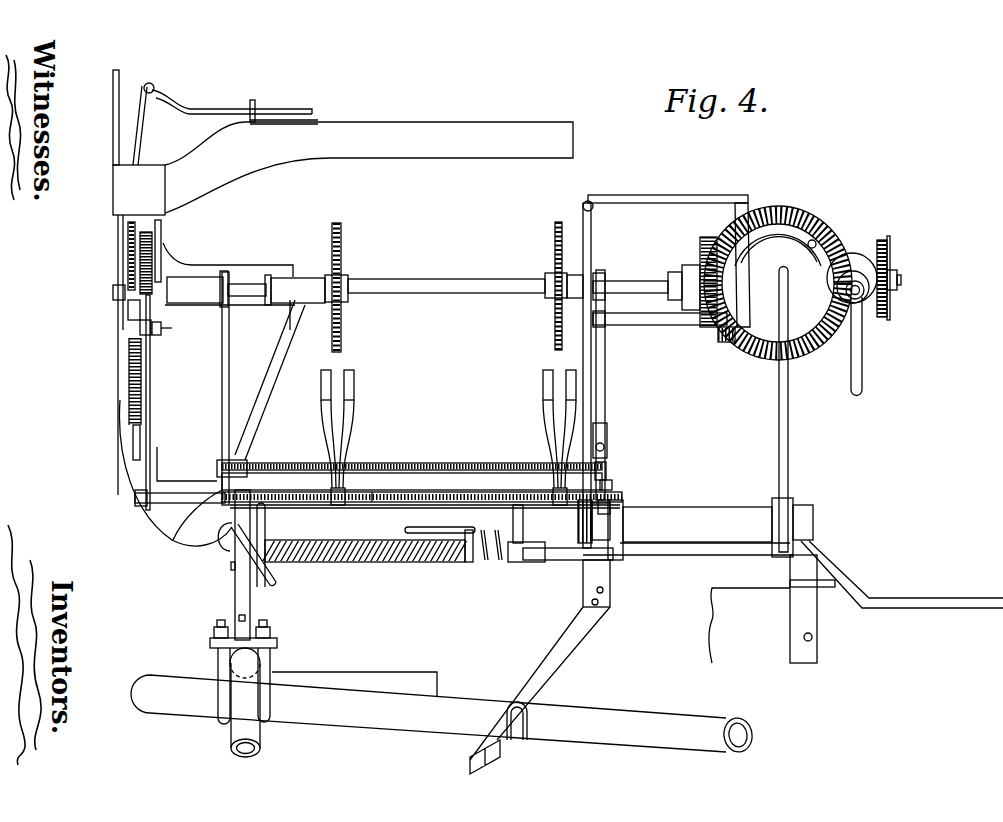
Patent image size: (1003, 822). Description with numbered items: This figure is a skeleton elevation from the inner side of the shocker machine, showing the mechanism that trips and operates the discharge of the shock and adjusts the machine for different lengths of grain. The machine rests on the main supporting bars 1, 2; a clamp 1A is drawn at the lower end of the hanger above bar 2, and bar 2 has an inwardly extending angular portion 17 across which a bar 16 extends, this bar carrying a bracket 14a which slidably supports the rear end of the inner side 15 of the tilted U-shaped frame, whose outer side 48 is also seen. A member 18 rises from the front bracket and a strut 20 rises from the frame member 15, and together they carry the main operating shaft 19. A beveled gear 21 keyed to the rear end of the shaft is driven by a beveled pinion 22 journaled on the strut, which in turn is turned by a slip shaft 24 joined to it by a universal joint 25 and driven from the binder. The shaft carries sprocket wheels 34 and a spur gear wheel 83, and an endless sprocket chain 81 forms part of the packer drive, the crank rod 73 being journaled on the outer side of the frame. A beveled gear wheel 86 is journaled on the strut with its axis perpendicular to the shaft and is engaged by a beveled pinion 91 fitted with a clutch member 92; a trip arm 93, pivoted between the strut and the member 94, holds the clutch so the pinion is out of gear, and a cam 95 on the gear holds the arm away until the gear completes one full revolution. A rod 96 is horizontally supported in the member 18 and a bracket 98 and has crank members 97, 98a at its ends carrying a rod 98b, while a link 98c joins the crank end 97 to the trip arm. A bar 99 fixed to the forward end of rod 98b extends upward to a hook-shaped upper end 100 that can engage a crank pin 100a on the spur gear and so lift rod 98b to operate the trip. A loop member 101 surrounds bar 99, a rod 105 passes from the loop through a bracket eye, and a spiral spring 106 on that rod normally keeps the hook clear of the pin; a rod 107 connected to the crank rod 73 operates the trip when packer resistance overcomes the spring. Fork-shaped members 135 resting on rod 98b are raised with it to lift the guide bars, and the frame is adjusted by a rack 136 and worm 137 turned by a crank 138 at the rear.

The main supporting bar 1 is at (238, 712).
The hanger bar and clamp 1A is at (237, 633).
The main supporting bar 2 is at (477, 707).
The bracket 14a is at (602, 505).
The inner side of U-shaped frame 15 is at (713, 503).
The bar 16 is at (552, 673).
The inwardly extending angular portion 17 is at (618, 708).
The member 18 is at (224, 412).
The main operating shaft 19 is at (412, 283).
The strut 20 is at (790, 441).
The beveled gear 21 is at (888, 243).
The beveled pinion 22 is at (873, 277).
The slip shaft 24 is at (859, 378).
The universal joint 25 is at (866, 312).
The sprocket wheels 34 is at (554, 233).
The outer side of frame 48 is at (447, 128).
The crank rod 73 is at (192, 107).
The endless sprocket chain 81 is at (127, 227).
The spur gear wheel 83 is at (157, 323).
The beveled gear wheel 86 is at (788, 207).
The beveled pinion 91 is at (705, 261).
The clutch member 92 is at (693, 265).
The trip arm 93 is at (725, 325).
The member 94 is at (592, 340).
The cam 95 is at (812, 242).
The rod 96 is at (438, 466).
The crank member 97 is at (602, 475).
The bracket 98 is at (598, 394).
The crank member 98a is at (230, 523).
The rod 98b is at (378, 497).
The link 98c is at (606, 487).
The bar 99 is at (147, 470).
The hook-shaped upper end 100 is at (136, 304).
The crank pin 100a is at (117, 280).
The loop member 101 is at (137, 338).
The rod 105 is at (137, 447).
The spiral spring 106 is at (135, 393).
The rod 107 is at (143, 129).
The fork-shaped members 135 is at (355, 413).
The rack 136 is at (418, 563).
The worm 137 is at (507, 563).
The crank 138 is at (848, 590).